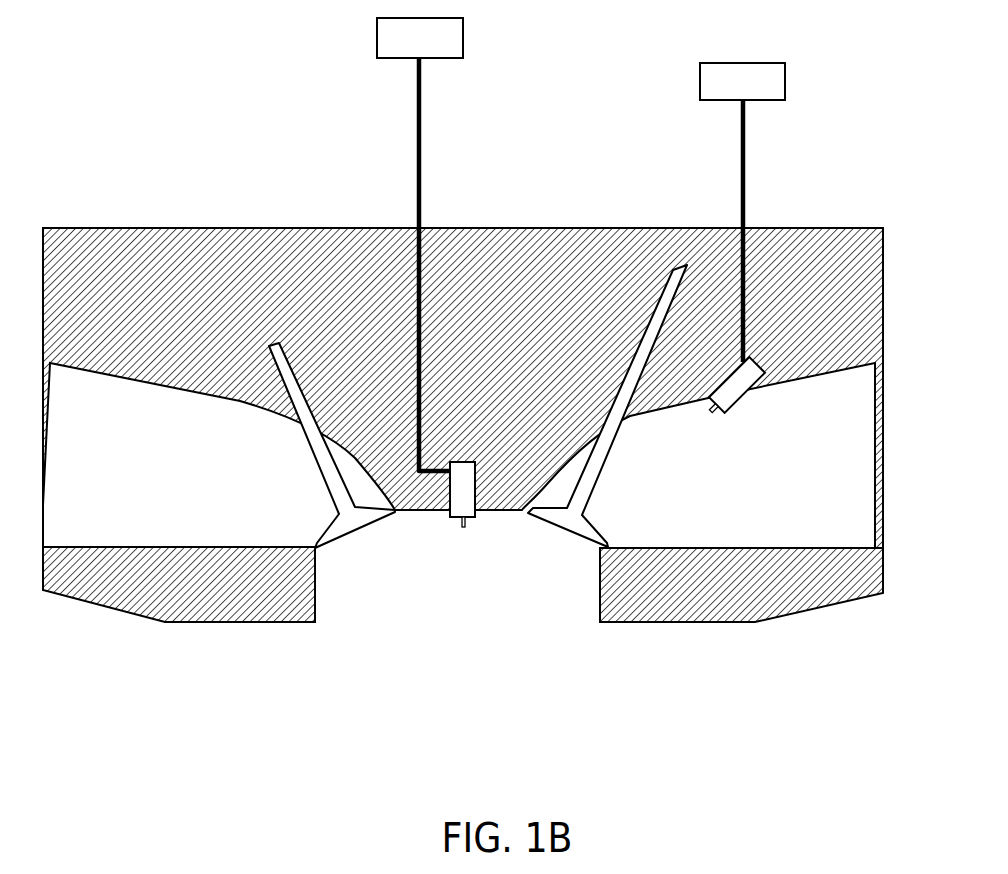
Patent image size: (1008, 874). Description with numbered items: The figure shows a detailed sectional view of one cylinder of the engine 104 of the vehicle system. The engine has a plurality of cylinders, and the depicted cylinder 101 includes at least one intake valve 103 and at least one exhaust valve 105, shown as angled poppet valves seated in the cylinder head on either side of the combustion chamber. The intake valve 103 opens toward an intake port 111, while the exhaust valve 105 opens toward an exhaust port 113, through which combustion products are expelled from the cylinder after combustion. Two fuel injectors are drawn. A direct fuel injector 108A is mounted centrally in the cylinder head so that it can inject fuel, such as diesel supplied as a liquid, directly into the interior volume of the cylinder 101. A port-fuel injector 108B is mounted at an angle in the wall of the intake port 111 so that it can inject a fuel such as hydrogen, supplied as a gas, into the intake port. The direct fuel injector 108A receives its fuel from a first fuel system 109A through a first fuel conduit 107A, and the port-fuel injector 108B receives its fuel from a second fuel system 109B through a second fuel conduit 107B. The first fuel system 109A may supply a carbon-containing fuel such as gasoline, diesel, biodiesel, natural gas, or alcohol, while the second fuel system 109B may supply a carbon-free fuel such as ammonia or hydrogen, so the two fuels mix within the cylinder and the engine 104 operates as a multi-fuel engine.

The cylinder 101 is at (475, 597).
The intake valve 103 is at (615, 445).
The engine 104 is at (797, 179).
The exhaust valve 105 is at (303, 435).
The first fuel conduit 107A is at (418, 93).
The second fuel conduit 107B is at (742, 146).
The direct fuel injector 108A is at (455, 518).
The port-fuel injector 108B is at (752, 392).
The first fuel system 109A is at (398, 49).
The second fuel system 109B is at (720, 93).
The intake port 111 is at (762, 485).
The exhaust port 113 is at (180, 478).